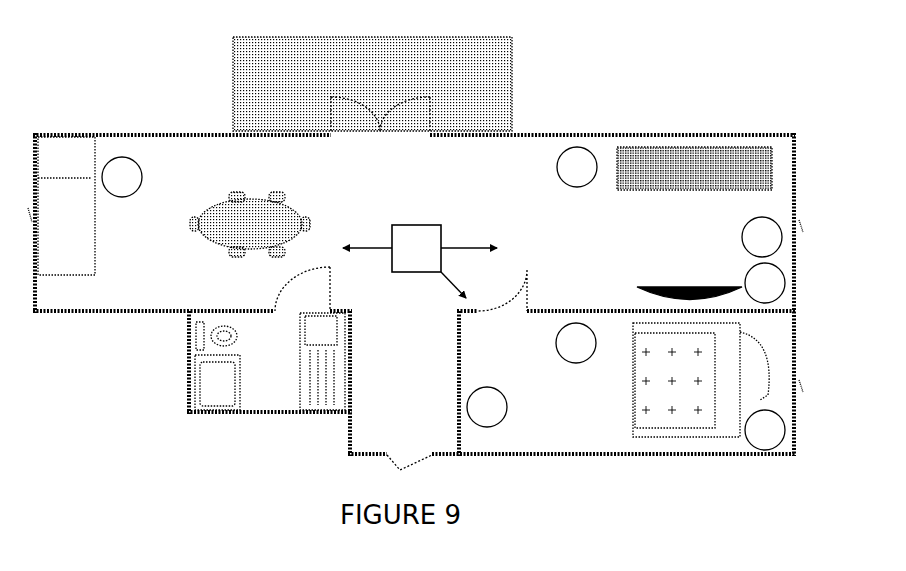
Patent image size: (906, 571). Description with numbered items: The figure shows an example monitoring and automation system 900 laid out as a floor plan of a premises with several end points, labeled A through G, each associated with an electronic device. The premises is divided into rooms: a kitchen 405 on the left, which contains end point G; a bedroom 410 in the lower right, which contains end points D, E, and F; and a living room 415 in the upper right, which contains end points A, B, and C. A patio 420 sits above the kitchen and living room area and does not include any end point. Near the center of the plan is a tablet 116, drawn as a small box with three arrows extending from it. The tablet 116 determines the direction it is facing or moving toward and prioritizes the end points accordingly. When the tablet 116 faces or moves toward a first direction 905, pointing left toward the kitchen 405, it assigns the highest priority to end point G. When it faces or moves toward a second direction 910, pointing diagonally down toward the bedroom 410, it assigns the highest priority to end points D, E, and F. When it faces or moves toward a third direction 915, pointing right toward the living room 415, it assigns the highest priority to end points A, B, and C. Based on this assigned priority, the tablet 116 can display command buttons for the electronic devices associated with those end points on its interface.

The monitoring and automation system 900 is at (568, 43).
The kitchen 405 is at (174, 215).
The bedroom 410 is at (626, 386).
The living room 415 is at (671, 225).
The patio 420 is at (372, 84).
The tablet 116 is at (416, 248).
The first direction 905 is at (386, 246).
The second direction 910 is at (450, 285).
The third direction 915 is at (456, 246).